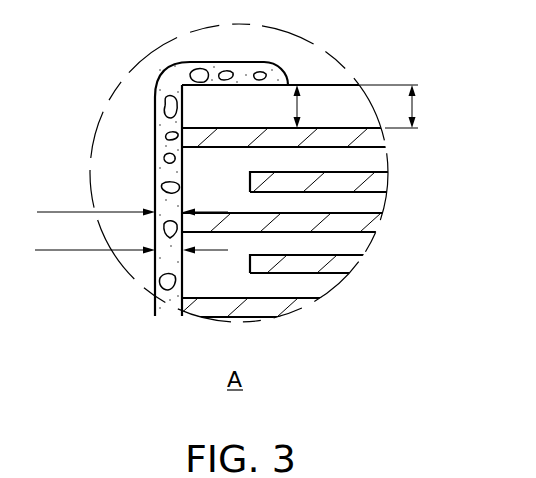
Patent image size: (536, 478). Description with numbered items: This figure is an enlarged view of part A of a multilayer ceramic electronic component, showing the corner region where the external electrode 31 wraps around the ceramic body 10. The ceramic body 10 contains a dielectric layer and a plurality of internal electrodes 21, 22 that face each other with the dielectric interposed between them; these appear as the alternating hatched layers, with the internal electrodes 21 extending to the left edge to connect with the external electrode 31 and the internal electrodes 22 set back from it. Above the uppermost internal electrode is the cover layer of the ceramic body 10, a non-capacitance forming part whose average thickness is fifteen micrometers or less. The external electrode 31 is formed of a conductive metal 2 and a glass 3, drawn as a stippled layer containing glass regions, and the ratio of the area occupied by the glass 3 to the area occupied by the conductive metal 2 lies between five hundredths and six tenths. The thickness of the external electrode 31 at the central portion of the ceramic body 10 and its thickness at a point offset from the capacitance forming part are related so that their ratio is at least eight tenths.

The ceramic body 10 is at (320, 84).
The internal electrode 21 is at (380, 142).
The internal electrode 22 is at (380, 182).
The glass 3 is at (170, 289).
The conductive metal 2 is at (168, 305).
The external electrode 31 is at (155, 285).